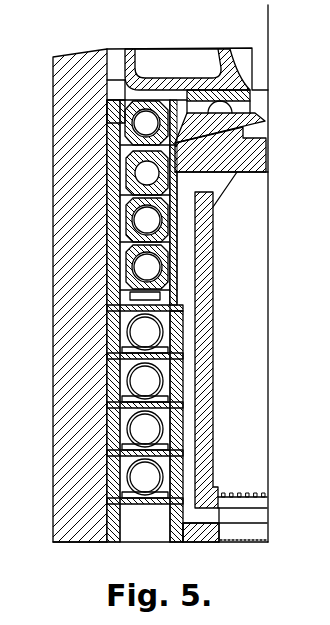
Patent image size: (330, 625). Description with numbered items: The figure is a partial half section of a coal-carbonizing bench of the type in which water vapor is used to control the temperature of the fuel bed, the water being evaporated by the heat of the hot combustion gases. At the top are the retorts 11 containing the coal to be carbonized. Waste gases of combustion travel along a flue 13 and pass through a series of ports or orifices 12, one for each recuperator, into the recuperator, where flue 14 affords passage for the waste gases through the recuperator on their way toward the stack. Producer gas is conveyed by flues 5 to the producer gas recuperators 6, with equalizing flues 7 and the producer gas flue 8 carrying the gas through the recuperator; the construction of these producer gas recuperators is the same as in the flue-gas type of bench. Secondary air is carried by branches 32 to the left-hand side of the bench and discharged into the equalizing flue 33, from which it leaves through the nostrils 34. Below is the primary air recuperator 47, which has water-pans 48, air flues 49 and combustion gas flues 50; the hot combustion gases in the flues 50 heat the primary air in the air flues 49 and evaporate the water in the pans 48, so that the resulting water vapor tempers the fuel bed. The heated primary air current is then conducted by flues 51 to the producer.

The flues 5 is at (223, 340).
The producer gas recuperators 6 is at (110, 200).
The equalizing flues 7 is at (130, 297).
The producer gas flue 8 is at (127, 154).
The retorts 11 is at (187, 69).
The ports or orifices 12 is at (156, 117).
The flue 13 is at (146, 123).
The flue 14 is at (147, 173).
The branches of flues 32 is at (229, 172).
The equalizing flue 33 is at (246, 92).
The nostrils 34 is at (235, 105).
The primary air recuperator 47 is at (118, 406).
The water-pans 48 is at (145, 419).
The air flues 49 is at (118, 462).
The combustion gas flues 50 is at (145, 430).
The flues 51 is at (218, 426).